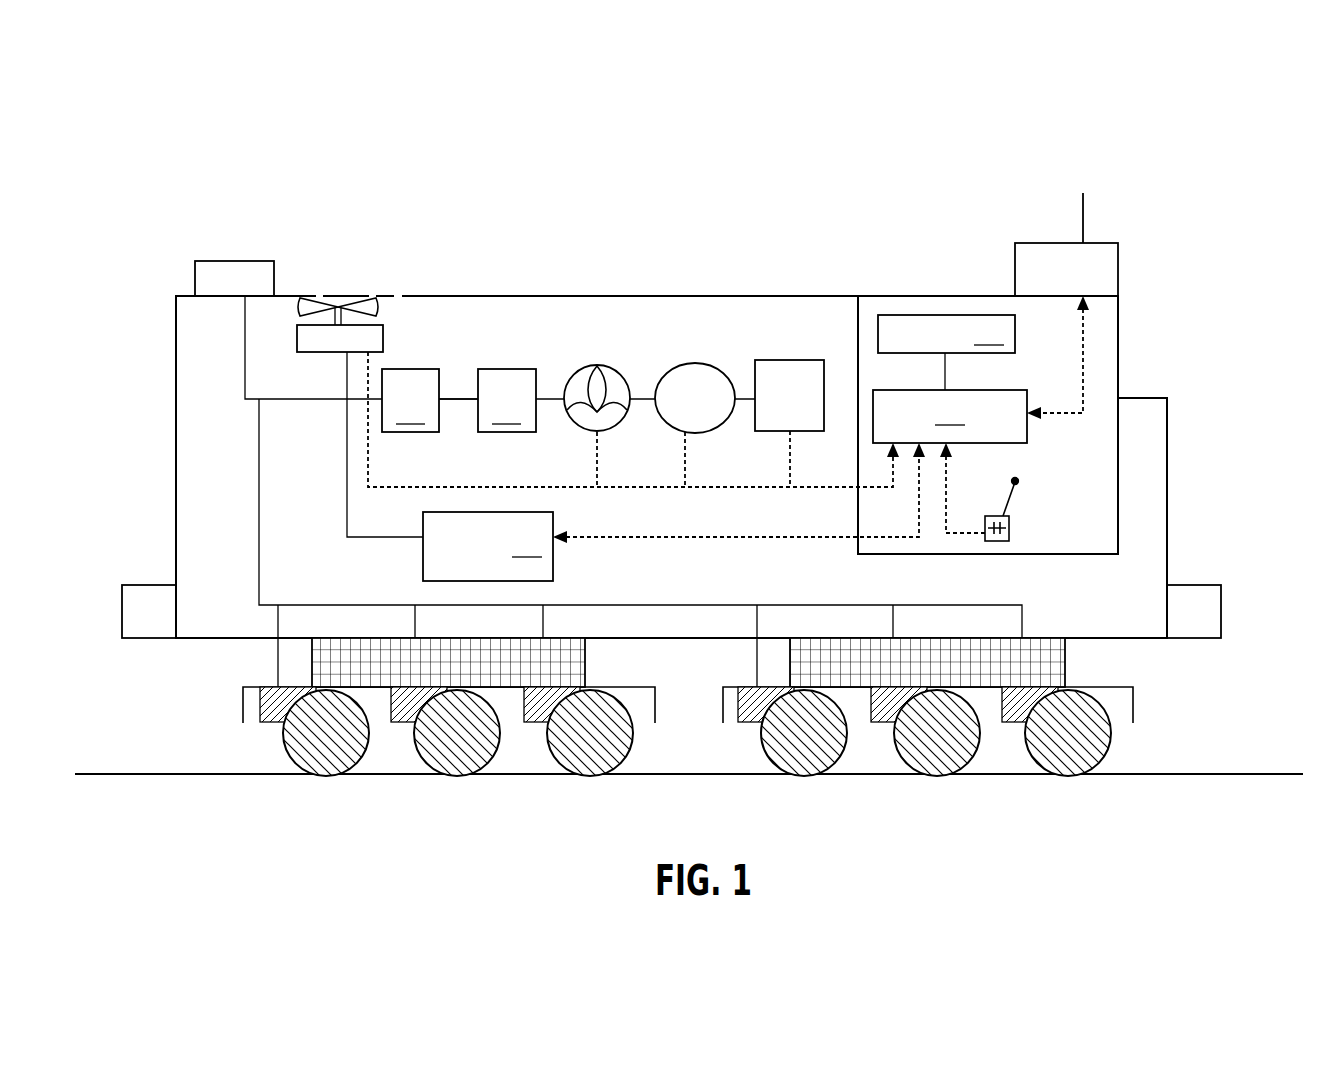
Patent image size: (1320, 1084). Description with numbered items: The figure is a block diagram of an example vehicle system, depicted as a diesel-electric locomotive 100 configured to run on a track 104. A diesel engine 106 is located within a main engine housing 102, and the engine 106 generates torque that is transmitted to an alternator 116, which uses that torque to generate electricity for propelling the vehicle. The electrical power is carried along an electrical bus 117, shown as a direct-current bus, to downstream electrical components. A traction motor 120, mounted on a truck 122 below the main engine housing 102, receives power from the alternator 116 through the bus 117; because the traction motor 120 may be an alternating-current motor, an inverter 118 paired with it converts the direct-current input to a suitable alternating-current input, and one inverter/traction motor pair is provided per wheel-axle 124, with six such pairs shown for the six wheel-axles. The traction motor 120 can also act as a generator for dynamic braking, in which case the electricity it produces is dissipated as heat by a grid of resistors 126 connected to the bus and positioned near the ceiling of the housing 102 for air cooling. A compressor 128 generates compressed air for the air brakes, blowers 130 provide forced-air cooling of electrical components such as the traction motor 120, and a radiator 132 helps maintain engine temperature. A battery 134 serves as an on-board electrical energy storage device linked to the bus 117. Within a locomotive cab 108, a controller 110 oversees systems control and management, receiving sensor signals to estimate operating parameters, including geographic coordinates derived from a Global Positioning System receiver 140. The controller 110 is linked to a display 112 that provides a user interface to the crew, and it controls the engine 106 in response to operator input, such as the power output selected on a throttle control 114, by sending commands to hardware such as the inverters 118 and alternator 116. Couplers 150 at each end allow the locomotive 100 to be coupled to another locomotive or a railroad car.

The locomotive 100 is at (1170, 116).
The main engine housing 102 is at (672, 296).
The track 104 is at (1200, 773).
The diesel engine 106 is at (488, 546).
The locomotive cab 108 is at (932, 300).
The controller 110 is at (950, 398).
The display 112 is at (946, 334).
The throttle control 114 is at (1009, 528).
The alternator 116 is at (410, 400).
The electrical bus 117 is at (458, 397).
The inverters 118 is at (507, 400).
The traction motor 120 is at (538, 722).
The truck 122 is at (312, 657).
The wheel-axle 124 is at (289, 754).
The grid of resistors 126 is at (265, 261).
The compressor 128 is at (701, 363).
The blowers 130 is at (599, 366).
The radiator 132 is at (297, 338).
The battery 134 is at (803, 360).
The Global Positioning System (GPS) receiver 140 is at (1118, 257).
The coupler 150 is at (165, 621).